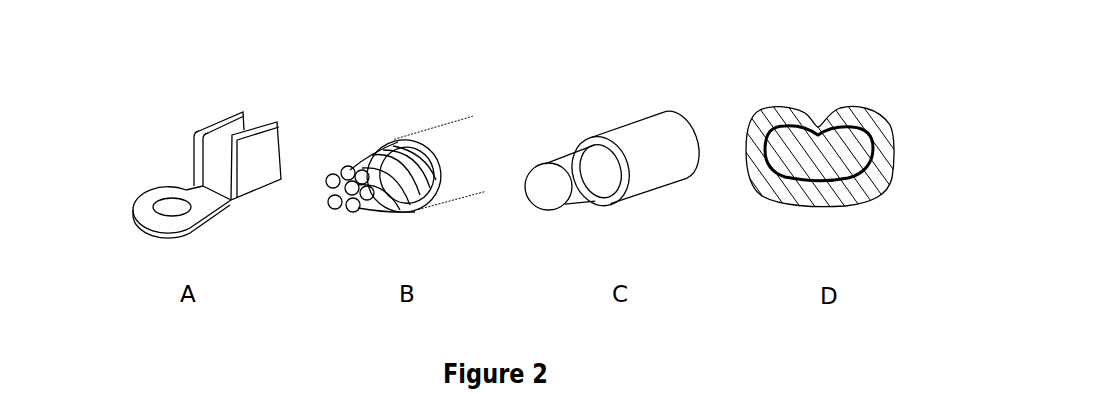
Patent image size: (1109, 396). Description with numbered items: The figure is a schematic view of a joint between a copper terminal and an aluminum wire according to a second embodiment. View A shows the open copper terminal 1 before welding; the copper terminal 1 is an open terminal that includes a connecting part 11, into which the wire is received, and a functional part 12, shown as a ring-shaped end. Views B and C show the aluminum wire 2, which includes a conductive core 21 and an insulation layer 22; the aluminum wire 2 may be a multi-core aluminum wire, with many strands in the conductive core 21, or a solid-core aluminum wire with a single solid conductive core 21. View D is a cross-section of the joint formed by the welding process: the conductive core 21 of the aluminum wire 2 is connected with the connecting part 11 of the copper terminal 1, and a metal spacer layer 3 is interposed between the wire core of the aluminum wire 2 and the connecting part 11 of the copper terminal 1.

The copper terminal 1 is at (214, 201).
The connecting part 11 is at (220, 145).
The functional part 12 is at (145, 203).
The aluminum wire 2 is at (449, 193).
The conductive core 21 is at (353, 180).
The insulation layer 22 is at (382, 145).
The metal spacer layer 3 is at (873, 160).